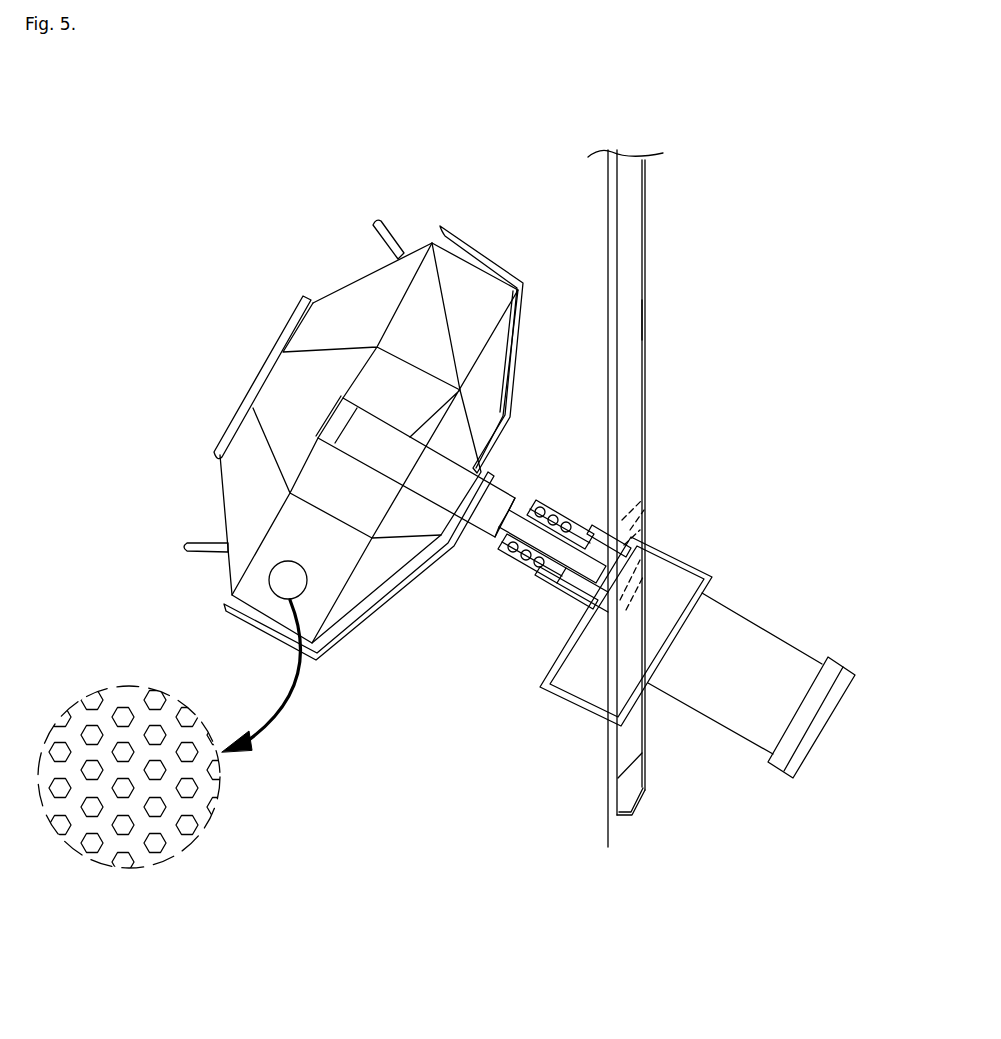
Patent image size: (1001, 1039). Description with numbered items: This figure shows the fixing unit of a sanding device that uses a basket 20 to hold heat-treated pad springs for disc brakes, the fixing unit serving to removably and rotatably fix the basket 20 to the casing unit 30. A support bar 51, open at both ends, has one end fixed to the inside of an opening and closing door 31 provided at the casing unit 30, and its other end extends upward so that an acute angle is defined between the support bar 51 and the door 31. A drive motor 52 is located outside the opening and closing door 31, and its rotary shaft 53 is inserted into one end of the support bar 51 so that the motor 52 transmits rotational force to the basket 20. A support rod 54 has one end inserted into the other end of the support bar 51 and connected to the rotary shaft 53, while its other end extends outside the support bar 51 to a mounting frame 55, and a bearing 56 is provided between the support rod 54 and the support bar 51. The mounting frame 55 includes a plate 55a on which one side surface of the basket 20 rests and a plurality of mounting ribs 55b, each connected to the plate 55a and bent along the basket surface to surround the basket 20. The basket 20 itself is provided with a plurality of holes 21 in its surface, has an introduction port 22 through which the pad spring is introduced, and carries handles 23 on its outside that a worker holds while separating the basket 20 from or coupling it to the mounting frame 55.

The basket 20 is at (218, 268).
The holes 21 is at (155, 847).
The introduction port 22 is at (240, 410).
The handles 23 is at (375, 221).
The casing unit 30 is at (665, 200).
The opening and closing door 31 is at (646, 256).
The support bar 51 is at (545, 500).
The drive motor 52 is at (800, 648).
The rotary shaft 53 is at (590, 568).
The support rod 54 is at (540, 540).
The mounting frame 55 is at (370, 616).
The plate 55a is at (437, 553).
The mounting ribs 55b is at (438, 232).
The bearing 56 is at (575, 520).